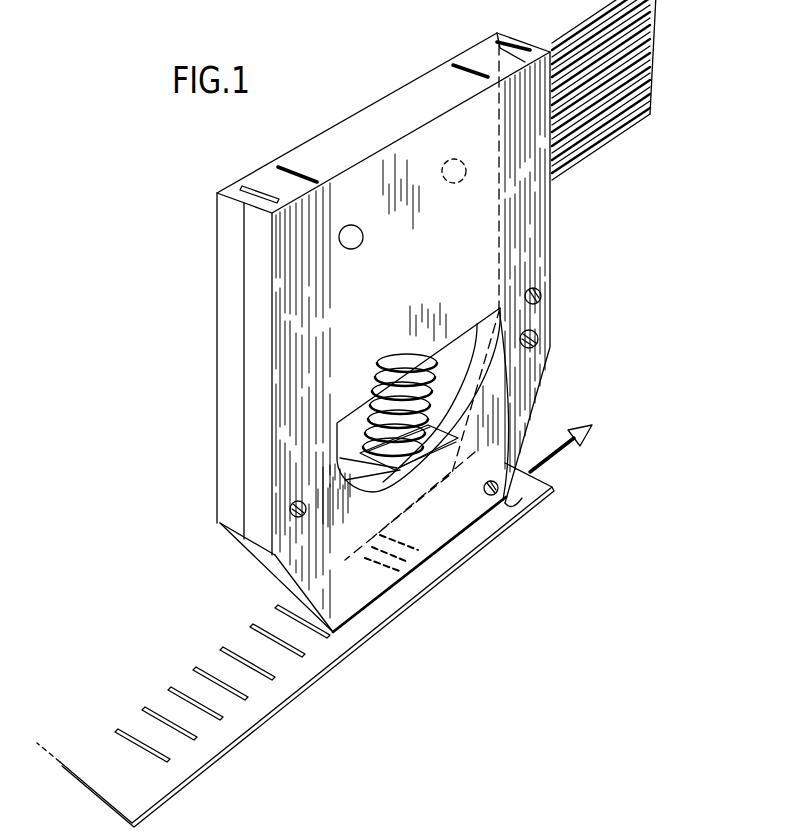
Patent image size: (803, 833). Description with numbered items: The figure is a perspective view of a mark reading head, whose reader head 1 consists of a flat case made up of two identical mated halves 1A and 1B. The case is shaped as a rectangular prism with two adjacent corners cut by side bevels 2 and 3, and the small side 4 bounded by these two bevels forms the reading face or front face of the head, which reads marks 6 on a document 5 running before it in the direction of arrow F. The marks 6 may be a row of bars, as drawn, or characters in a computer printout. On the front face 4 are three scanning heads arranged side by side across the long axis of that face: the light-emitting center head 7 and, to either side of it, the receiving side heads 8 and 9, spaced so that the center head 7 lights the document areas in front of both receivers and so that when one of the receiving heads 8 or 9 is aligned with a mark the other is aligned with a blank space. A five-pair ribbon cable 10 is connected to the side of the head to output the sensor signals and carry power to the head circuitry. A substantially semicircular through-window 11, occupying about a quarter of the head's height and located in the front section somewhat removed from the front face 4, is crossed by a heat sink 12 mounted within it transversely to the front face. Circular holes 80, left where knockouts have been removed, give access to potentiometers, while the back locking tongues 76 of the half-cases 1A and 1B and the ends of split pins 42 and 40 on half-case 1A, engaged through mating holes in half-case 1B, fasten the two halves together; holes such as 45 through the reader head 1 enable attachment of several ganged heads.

The reader head 1 is at (200, 236).
The half-case 1A is at (232, 318).
The half-case 1B is at (255, 347).
The side bevel 2 is at (284, 577).
The side bevel 3 is at (548, 406).
The front face 4 is at (362, 620).
The document 5 is at (272, 687).
The marks 6 is at (167, 690).
The center head 7 is at (407, 552).
The side head 8 is at (393, 565).
The side head 9 is at (417, 548).
The ribbon cable 10 is at (618, 108).
The through-window 11 is at (348, 427).
The heat sink 12 is at (390, 362).
The split pin 40 is at (499, 487).
The split pin 42 is at (541, 296).
The holes 45 is at (538, 340).
The back locking tongues 76 is at (273, 187).
The circular holes 80 is at (456, 188).
The arrow F is at (573, 446).